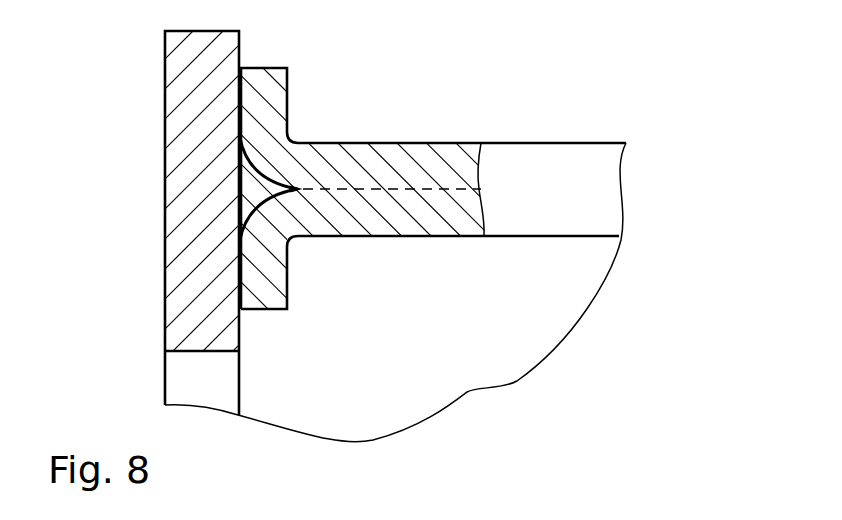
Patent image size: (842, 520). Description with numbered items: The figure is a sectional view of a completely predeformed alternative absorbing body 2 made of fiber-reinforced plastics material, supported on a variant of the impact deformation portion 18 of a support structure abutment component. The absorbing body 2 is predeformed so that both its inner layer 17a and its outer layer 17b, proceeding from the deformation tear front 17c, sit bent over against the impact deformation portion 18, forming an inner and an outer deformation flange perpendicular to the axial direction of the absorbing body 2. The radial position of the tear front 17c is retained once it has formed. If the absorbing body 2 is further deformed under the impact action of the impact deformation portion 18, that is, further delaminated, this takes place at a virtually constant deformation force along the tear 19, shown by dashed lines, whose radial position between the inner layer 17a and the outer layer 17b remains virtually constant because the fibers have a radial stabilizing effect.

The absorbing body 2 is at (553, 138).
The inner layer 17a is at (250, 277).
The outer layer 17b is at (247, 80).
The tear front 17c is at (299, 188).
The impact deformation portion 18 is at (172, 189).
The tear 19 is at (451, 189).